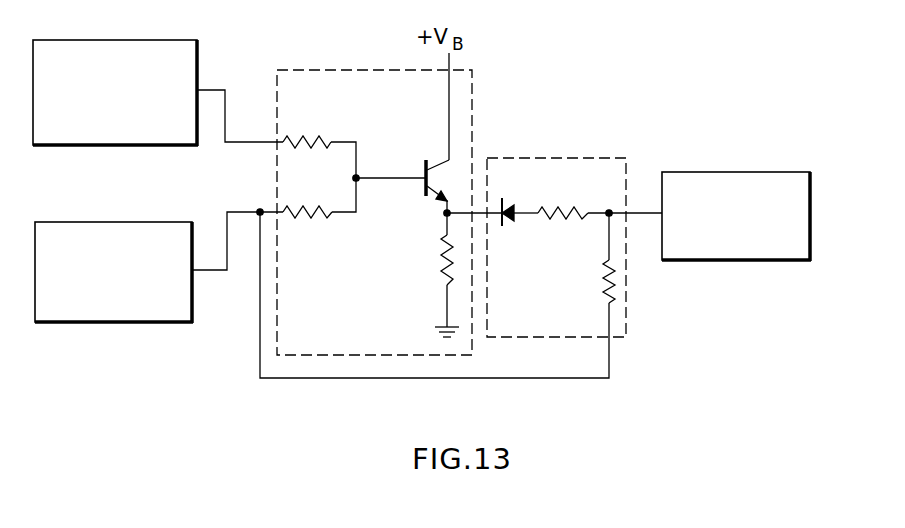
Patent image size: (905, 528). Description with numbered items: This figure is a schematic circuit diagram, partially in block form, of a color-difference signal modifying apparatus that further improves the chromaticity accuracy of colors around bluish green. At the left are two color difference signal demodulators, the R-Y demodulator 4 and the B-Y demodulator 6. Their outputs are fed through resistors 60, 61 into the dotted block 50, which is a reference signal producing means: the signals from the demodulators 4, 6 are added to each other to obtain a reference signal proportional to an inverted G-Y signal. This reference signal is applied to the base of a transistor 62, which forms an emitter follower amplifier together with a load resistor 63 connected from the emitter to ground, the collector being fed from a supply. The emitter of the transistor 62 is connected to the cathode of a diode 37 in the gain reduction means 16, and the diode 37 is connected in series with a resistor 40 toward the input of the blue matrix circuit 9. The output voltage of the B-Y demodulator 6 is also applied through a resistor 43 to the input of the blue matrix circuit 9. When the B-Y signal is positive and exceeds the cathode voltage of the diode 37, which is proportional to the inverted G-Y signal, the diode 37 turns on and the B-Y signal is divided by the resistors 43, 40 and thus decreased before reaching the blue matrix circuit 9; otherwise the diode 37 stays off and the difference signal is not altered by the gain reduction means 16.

The R-Y demodulator 4 is at (199, 50).
The B-Y demodulator 6 is at (194, 238).
The blue matrix circuit 9 is at (740, 171).
The gain reduction means 16 is at (559, 157).
The diode 37 is at (512, 208).
The resistor 40 is at (560, 210).
The resistor 43 is at (605, 278).
The reference signal producing means 50 is at (474, 80).
The resistor 60 is at (318, 133).
The resistor 61 is at (302, 204).
The transistor 62 is at (424, 162).
The load resistor 63 is at (440, 250).